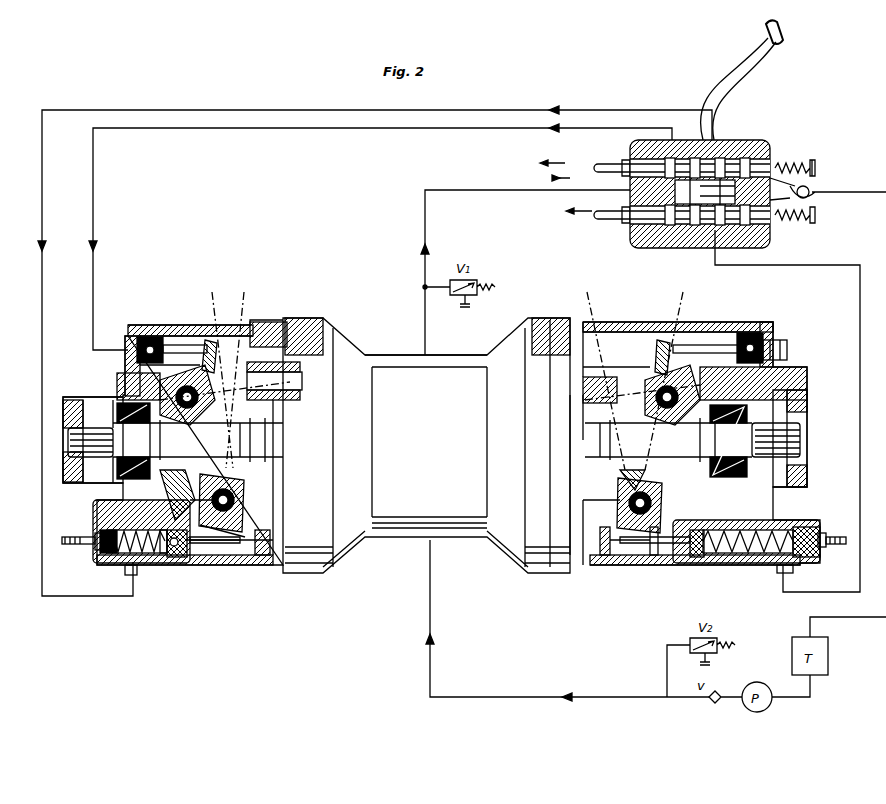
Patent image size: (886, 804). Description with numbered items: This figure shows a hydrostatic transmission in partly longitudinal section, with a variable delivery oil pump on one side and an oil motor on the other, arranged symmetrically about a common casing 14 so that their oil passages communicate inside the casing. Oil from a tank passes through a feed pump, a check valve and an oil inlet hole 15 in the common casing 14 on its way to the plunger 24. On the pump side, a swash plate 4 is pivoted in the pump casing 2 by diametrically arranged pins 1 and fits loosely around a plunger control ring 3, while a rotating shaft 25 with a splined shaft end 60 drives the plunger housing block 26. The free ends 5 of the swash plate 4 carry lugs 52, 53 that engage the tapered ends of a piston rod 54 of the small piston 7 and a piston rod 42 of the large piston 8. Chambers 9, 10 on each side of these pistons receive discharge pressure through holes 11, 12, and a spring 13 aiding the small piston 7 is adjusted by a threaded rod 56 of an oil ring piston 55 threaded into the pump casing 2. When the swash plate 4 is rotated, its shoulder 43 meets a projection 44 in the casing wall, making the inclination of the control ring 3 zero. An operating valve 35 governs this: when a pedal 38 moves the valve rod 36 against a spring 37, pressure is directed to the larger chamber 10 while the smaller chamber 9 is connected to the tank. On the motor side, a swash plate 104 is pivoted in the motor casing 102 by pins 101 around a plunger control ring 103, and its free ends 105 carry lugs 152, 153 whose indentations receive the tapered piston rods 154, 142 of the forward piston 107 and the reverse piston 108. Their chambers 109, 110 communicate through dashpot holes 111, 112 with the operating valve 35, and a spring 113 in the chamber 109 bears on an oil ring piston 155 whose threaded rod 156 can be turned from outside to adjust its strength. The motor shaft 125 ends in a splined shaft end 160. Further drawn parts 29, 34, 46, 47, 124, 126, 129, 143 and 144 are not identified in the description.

The pins 1 is at (212, 452).
The pump casing 2 is at (232, 566).
The plunger control ring 3 is at (222, 488).
The swash plate 4 is at (222, 556).
The free end 5 is at (215, 390).
The piston 7 is at (165, 556).
The piston 8 is at (152, 337).
The chamber 9 is at (150, 555).
The chamber 10 is at (129, 338).
The hole 11 is at (120, 565).
The hole 12 is at (130, 355).
The spring 13 is at (131, 576).
The common casing 14 is at (390, 532).
The oil inlet hole 15 is at (438, 536).
The plunger 24 is at (270, 371).
The rotating shaft 25 is at (120, 435).
The plunger housing block 26 is at (280, 548).
The cylinder block 29 is at (106, 504).
The pressure line 34 is at (424, 350).
The operating valve 35 is at (642, 246).
The valve rod 36 is at (612, 163).
The spring 37 is at (797, 160).
The pedal 38 is at (776, 48).
The piston rod 42 is at (180, 345).
The shoulder 43 is at (205, 557).
The projection 44 is at (195, 505).
The second valve spool 46 is at (612, 224).
The second valve spring 47 is at (798, 226).
The lug 52 is at (262, 556).
The lug 53 is at (212, 340).
The piston rod 54 is at (183, 557).
The oil ring piston 55 is at (100, 556).
The threaded rod 56 is at (82, 540).
The splined shaft end 60 is at (85, 458).
The pins 101 is at (645, 448).
The motor casing 102 is at (673, 561).
The plunger control ring 103 is at (640, 486).
The swash plate 104 is at (630, 566).
The free end 105 is at (660, 380).
The piston 107 is at (705, 558).
The piston 108 is at (748, 333).
The chamber 109 is at (760, 560).
The chamber 110 is at (774, 355).
The dashpot hole 111 is at (790, 569).
The dashpot hole 112 is at (780, 345).
The spring 113 is at (800, 530).
The link 124 is at (600, 378).
The motor shaft 125 is at (790, 485).
The partition 126 is at (580, 556).
The housing body 129 is at (776, 397).
The piston rod 142 is at (701, 345).
The piston rod 143 is at (690, 560).
The lower piston 144 is at (660, 502).
The lug 152 is at (612, 560).
The lug 153 is at (661, 340).
The piston rod 154 is at (652, 560).
The oil ring piston 155 is at (822, 532).
The threaded rod 156 is at (836, 545).
The splined shaft end 160 is at (800, 445).